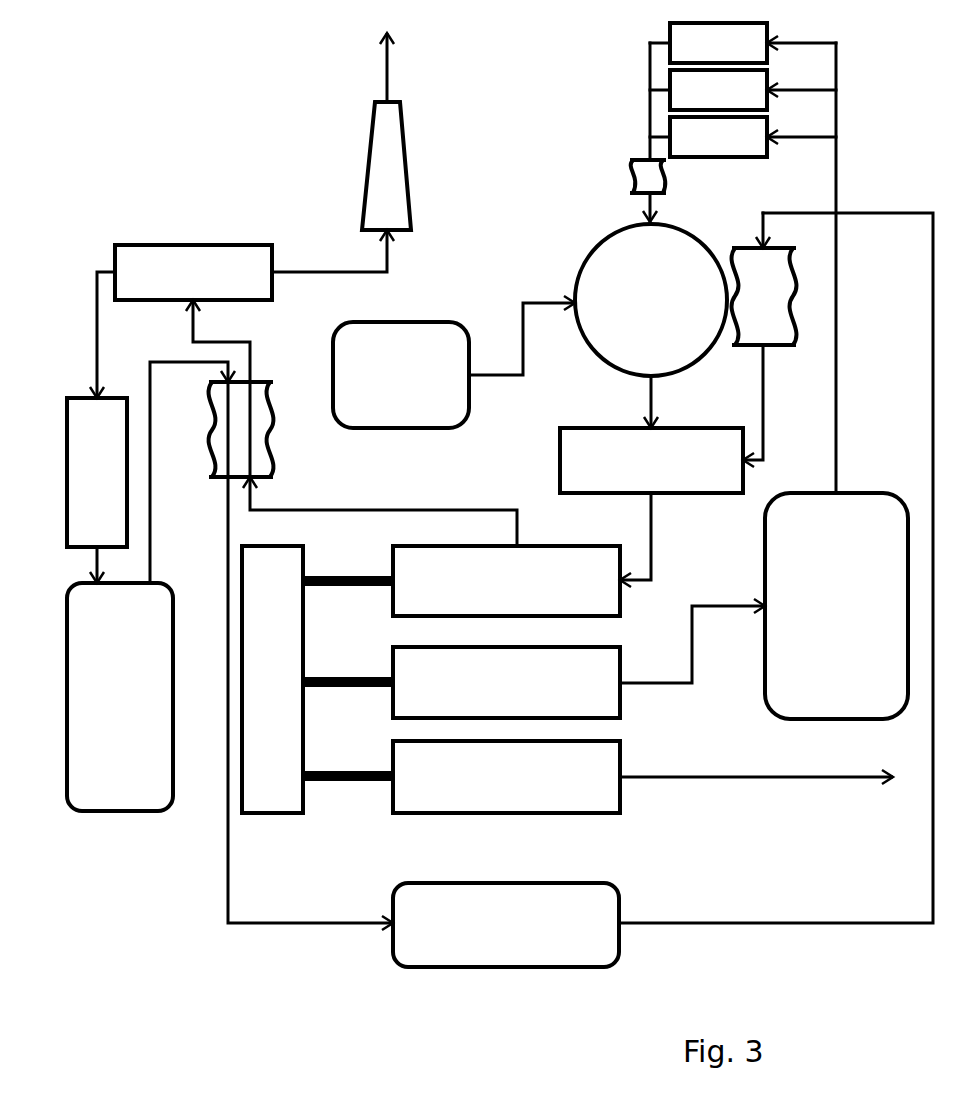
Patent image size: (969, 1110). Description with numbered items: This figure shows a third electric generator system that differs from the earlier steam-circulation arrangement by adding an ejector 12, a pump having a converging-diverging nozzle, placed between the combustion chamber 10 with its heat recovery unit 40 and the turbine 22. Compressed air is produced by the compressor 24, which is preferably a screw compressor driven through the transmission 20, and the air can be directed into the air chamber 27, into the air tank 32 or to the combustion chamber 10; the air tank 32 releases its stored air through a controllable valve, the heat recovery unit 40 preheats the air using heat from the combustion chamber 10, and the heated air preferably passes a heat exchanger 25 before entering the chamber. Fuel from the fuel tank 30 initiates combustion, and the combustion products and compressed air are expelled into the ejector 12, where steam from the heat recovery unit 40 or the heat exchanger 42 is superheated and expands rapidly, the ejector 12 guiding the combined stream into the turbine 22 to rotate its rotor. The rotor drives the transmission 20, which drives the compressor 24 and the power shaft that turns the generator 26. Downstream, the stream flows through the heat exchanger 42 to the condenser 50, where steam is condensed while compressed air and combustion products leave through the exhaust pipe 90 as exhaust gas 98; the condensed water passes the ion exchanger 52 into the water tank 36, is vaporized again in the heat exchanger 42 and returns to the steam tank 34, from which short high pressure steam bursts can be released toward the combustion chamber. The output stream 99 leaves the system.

The combustion chamber 10 is at (595, 272).
The ejector 12 is at (570, 468).
The transmission 20 is at (295, 808).
The turbine 22 is at (395, 555).
The compressor 24 is at (395, 657).
The heat exchanger 25 is at (630, 162).
The generator 26 is at (395, 752).
The air chamber 27 is at (767, 24).
The fuel tank 30 is at (423, 322).
The air tank 32 is at (780, 668).
The steam tank 34 is at (605, 952).
The water tank 36 is at (110, 806).
The heat recovery unit 40 is at (773, 335).
The heat exchanger 42 is at (268, 450).
The condenser 50 is at (235, 258).
The ion exchanger 52 is at (110, 415).
The exhaust pipe 90 is at (397, 200).
The exhaust gas 98 is at (387, 72).
The product stream 99 is at (795, 778).